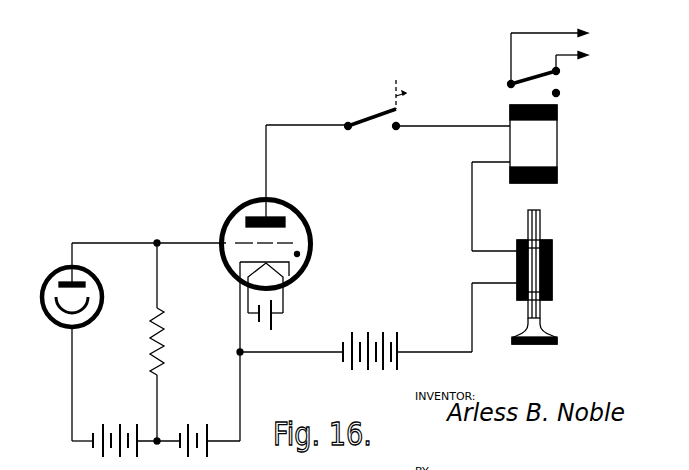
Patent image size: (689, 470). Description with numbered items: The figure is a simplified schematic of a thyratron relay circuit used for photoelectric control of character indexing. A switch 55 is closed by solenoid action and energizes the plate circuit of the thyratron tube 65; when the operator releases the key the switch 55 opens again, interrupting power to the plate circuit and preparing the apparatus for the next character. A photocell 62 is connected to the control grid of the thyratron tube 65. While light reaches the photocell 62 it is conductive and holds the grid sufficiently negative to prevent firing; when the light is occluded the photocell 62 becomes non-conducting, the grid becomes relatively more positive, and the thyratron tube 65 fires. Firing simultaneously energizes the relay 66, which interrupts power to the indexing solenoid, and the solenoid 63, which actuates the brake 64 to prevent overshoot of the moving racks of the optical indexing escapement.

The switch 55 is at (360, 128).
The photocell 62 is at (95, 272).
The solenoid 63 is at (553, 262).
The brake 64 is at (557, 334).
The thyratron tube 65 is at (309, 228).
The relay 66 is at (557, 131).